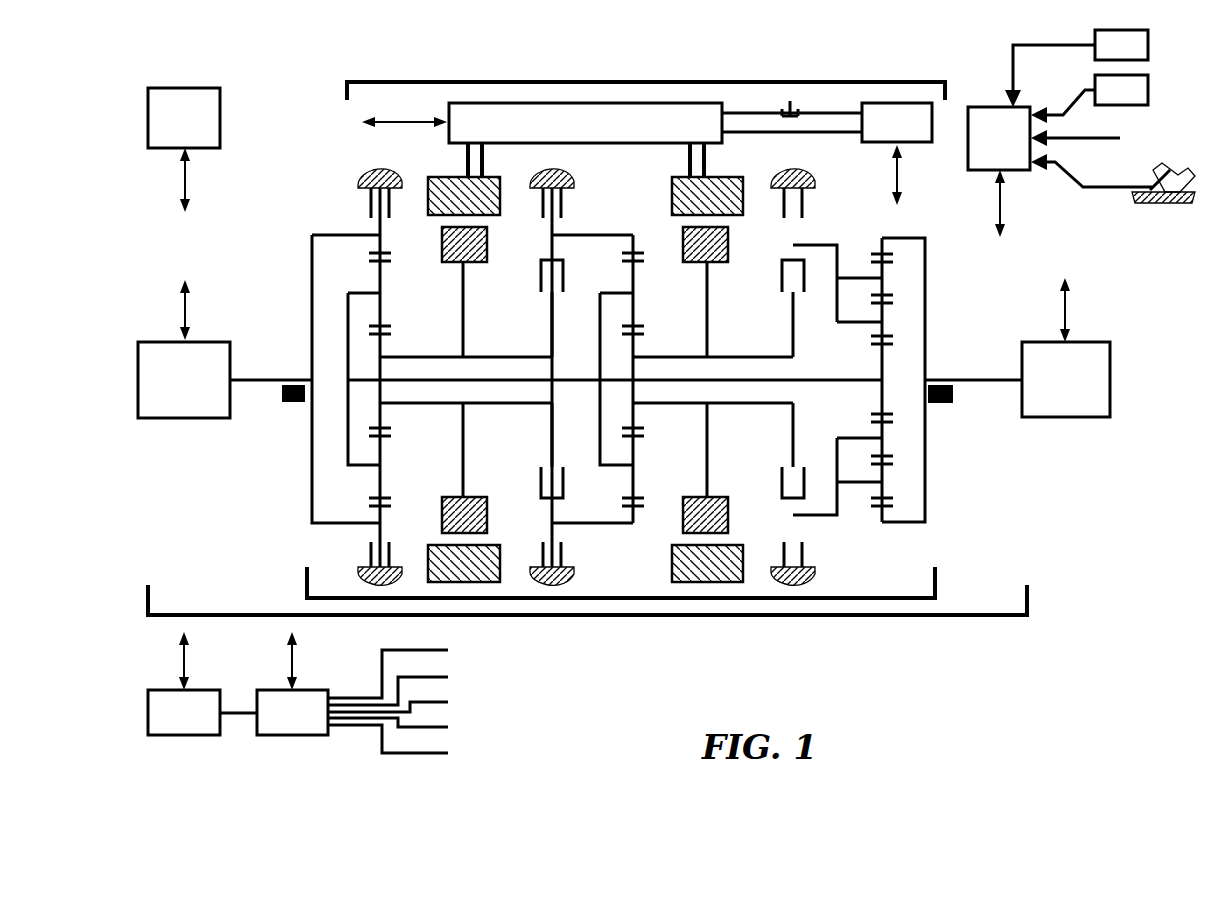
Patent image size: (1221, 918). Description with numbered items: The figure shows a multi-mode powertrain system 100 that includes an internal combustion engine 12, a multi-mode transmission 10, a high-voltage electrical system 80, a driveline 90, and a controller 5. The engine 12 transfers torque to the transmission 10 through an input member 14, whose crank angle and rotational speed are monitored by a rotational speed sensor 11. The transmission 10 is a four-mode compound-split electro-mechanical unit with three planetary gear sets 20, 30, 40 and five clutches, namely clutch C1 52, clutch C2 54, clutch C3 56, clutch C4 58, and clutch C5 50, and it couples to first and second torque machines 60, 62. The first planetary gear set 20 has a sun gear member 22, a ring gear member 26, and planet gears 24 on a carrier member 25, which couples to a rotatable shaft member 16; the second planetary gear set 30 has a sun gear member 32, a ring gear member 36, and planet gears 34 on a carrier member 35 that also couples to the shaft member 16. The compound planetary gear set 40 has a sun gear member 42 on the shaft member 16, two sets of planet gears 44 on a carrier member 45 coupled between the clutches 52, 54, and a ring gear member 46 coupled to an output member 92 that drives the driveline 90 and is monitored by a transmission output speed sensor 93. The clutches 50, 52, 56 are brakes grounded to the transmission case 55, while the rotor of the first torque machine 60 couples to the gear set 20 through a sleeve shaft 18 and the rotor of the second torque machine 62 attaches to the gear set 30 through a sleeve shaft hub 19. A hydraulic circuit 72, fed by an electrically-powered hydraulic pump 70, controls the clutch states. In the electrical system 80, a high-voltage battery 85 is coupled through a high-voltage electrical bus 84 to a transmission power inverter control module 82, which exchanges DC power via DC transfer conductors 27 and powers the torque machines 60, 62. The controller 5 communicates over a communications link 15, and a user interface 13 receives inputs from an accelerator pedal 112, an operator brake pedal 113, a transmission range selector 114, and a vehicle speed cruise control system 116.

The controller 5 is at (184, 118).
The multi-mode transmission 10 is at (737, 598).
The rotational speed sensor 11 is at (294, 404).
The internal combustion engine 12 is at (184, 380).
The user interface 13 is at (999, 138).
The input member 14 is at (263, 384).
The communications link 15 is at (611, 393).
The rotatable shaft member 16 is at (560, 378).
The sleeve shaft 18 is at (506, 356).
The sleeve shaft hub 19 is at (749, 356).
The planetary gear set 20 is at (400, 422).
The sun gear member 22 is at (386, 340).
The planet gears 24 is at (384, 296).
The carrier member 25 is at (352, 358).
The ring gear member 26 is at (384, 250).
The DC transfer conductors 27 is at (486, 154).
The planetary gear set 30 is at (646, 464).
The sun gear member 32 is at (639, 340).
The planet gears 34 is at (637, 296).
The carrier member 35 is at (600, 405).
The ring gear member 36 is at (637, 250).
The planetary gear set 40 is at (861, 364).
The sun gear member 42 is at (888, 414).
The planet gears 44 is at (886, 438).
The carrier member 45 is at (840, 250).
The ring gear member 46 is at (880, 506).
The clutch C5 50 is at (372, 208).
The clutch C1 52 is at (806, 210).
The clutch C2 54 is at (782, 286).
The transmission case 55 is at (372, 178).
The clutch C3 56 is at (565, 198).
The clutch C4 58 is at (540, 286).
The first torque machine 60 is at (490, 220).
The second torque machine 62 is at (733, 220).
The hydraulic pump 70 is at (202, 712).
The hydraulic circuit 72 is at (364, 701).
The high-voltage electrical system 80 is at (655, 82).
The transmission power inverter control module 82 is at (585, 123).
The high-voltage electrical bus 84 is at (827, 113).
The high-voltage battery 85 is at (897, 122).
The driveline 90 is at (1066, 379).
The output member 92 is at (978, 378).
The transmission output speed sensor 93 is at (958, 396).
The multi-mode powertrain system 100 is at (650, 615).
The accelerator pedal 112 is at (1155, 188).
The operator brake pedal 113 is at (1093, 138).
The transmission range selector 114 is at (1089, 99).
The vehicle speed cruise control system 116 is at (1076, 68).